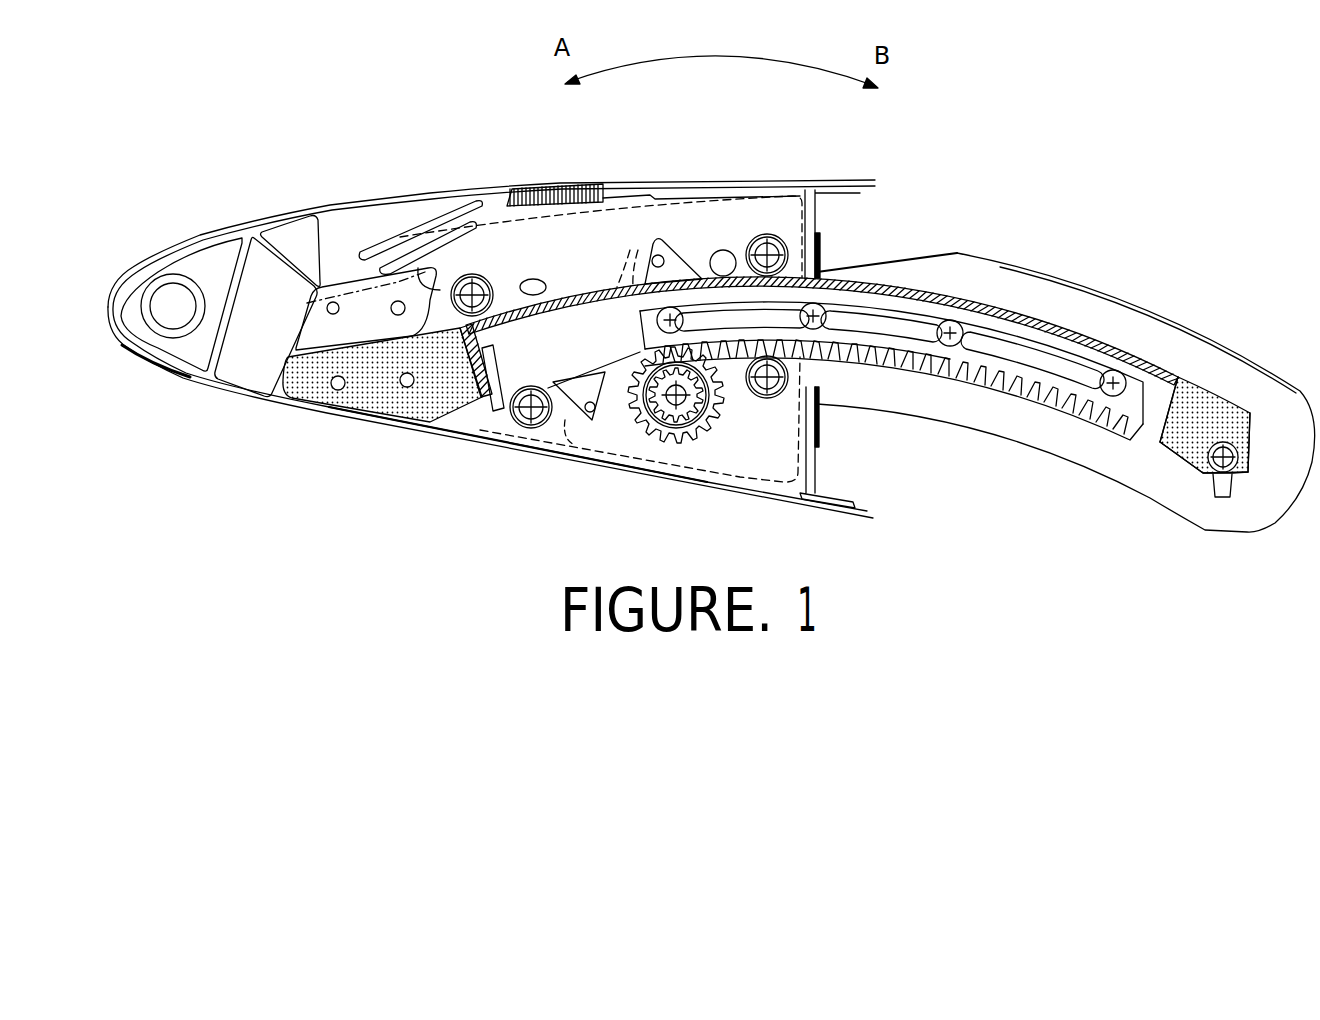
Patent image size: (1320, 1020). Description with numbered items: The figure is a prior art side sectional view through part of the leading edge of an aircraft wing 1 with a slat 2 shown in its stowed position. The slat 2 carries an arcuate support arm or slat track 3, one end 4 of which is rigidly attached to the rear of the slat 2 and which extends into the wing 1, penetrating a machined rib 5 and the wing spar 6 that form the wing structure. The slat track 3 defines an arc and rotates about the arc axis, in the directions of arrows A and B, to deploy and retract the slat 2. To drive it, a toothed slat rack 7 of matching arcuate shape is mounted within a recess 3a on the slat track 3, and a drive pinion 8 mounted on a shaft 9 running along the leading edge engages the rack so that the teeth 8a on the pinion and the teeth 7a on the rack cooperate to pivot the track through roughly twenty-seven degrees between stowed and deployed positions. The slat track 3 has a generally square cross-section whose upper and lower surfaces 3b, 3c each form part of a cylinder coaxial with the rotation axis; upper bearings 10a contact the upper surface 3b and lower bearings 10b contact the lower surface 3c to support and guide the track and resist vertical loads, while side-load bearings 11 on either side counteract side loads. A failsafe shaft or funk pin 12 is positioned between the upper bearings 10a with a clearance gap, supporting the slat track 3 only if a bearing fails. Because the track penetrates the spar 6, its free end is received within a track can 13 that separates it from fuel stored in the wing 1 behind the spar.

The wing 1 is at (850, 182).
The slat 2 is at (210, 228).
The slat track 3 is at (992, 322).
The recess 3a is at (1153, 433).
The upper surface 3b is at (1128, 348).
The lower surface 3c is at (1163, 453).
The end of slat track 4 is at (368, 405).
The machined rib 5 is at (630, 252).
The wing spar 6 is at (808, 187).
The slat rack 7 is at (997, 367).
The teeth 7a is at (830, 357).
The drive pinion 8 is at (657, 433).
The teeth 8a is at (700, 435).
The shaft 9 is at (673, 427).
The upper bearings 10a is at (474, 275).
The lower bearings 10b is at (527, 423).
The side-load bearings 11 is at (665, 237).
The failsafe shaft 12 is at (533, 279).
The track can 13 is at (1243, 360).